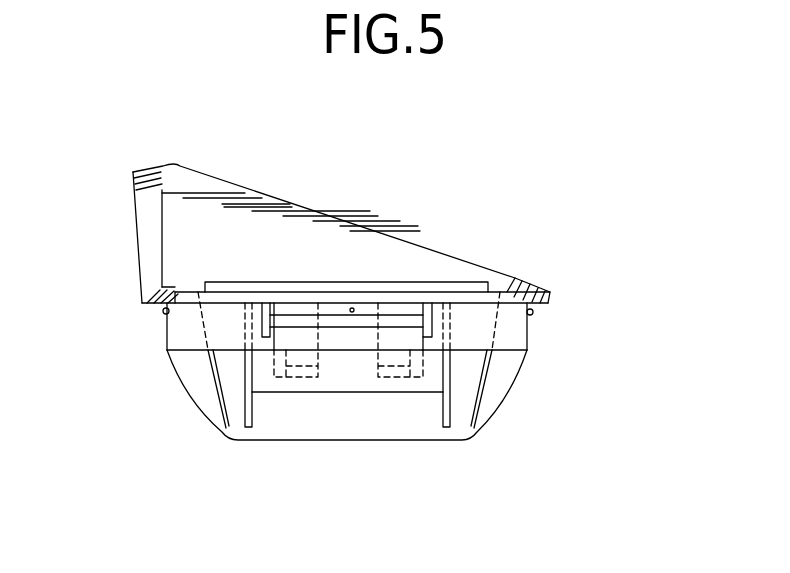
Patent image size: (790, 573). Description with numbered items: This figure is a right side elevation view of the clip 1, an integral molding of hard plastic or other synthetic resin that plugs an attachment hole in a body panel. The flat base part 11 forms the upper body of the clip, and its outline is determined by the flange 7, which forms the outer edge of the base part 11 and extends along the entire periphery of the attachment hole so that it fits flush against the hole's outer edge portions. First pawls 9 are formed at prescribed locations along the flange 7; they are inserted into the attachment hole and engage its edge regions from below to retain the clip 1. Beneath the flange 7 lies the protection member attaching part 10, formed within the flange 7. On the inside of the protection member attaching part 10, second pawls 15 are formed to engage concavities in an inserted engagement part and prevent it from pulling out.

The clip 1 is at (492, 235).
The flange 7 is at (537, 287).
The first pawl 9 is at (160, 312).
The protection member attaching part 10 is at (380, 439).
The base part 11 is at (280, 197).
The second pawl 15 is at (287, 377).